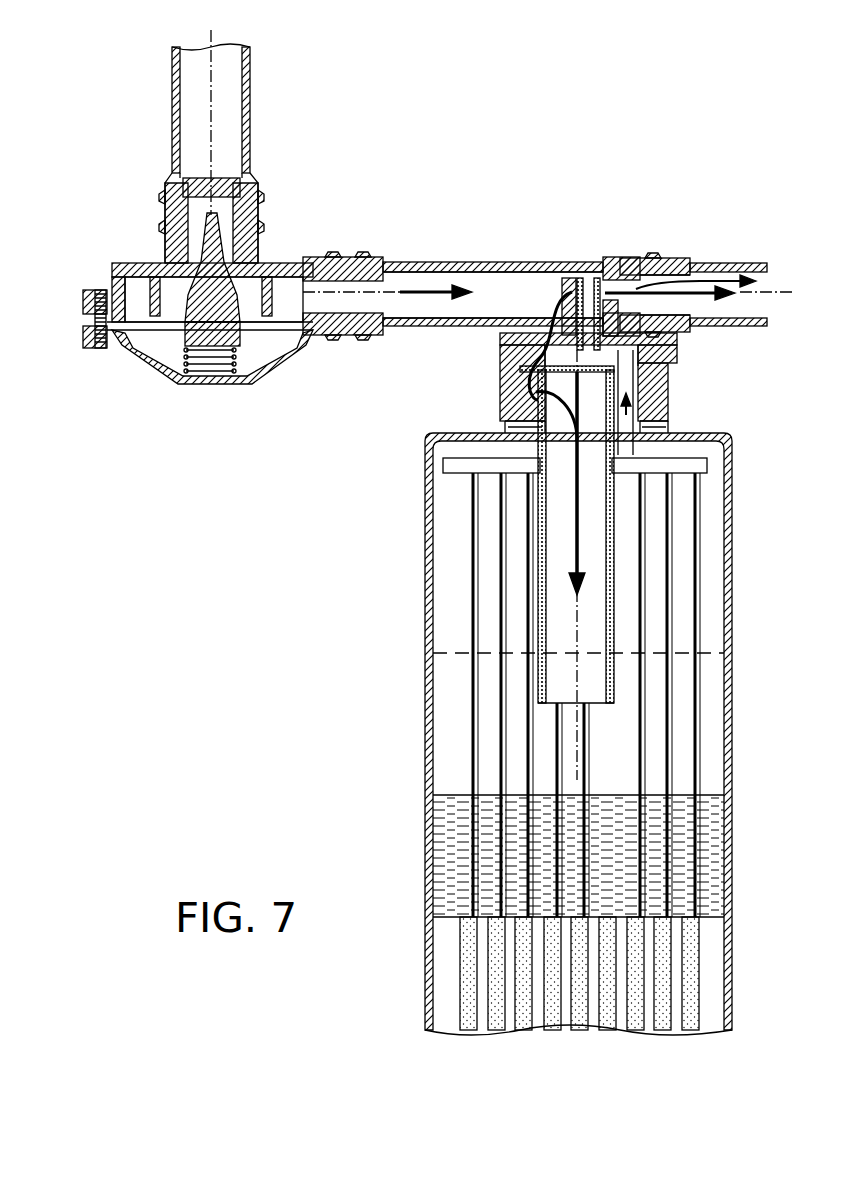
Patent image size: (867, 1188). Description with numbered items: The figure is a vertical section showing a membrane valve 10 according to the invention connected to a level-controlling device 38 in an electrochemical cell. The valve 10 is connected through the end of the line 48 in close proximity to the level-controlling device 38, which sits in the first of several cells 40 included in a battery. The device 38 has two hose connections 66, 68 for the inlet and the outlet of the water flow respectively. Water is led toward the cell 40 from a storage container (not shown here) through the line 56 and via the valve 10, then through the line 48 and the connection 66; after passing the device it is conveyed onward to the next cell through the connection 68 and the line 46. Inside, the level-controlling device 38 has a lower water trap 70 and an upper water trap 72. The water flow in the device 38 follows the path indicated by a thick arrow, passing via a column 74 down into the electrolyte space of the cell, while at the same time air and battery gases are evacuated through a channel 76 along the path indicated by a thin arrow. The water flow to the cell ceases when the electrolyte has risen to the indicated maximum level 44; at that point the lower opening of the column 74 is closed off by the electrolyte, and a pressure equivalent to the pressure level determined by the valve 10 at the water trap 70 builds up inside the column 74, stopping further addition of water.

The membrane valve 10 is at (291, 246).
The level-controlling device 38 is at (596, 248).
The cell 40 is at (410, 561).
The maximum level 44 is at (458, 653).
The line 46 is at (726, 249).
The line (end of the line) 48 is at (441, 248).
The line 56 is at (262, 107).
The hose connection (inlet) 66 is at (518, 283).
The hose connection (outlet) 68 is at (626, 283).
The lower water trap 70 is at (505, 407).
The upper water trap 72 is at (571, 287).
The column 74 is at (538, 512).
The channel 76 is at (637, 455).